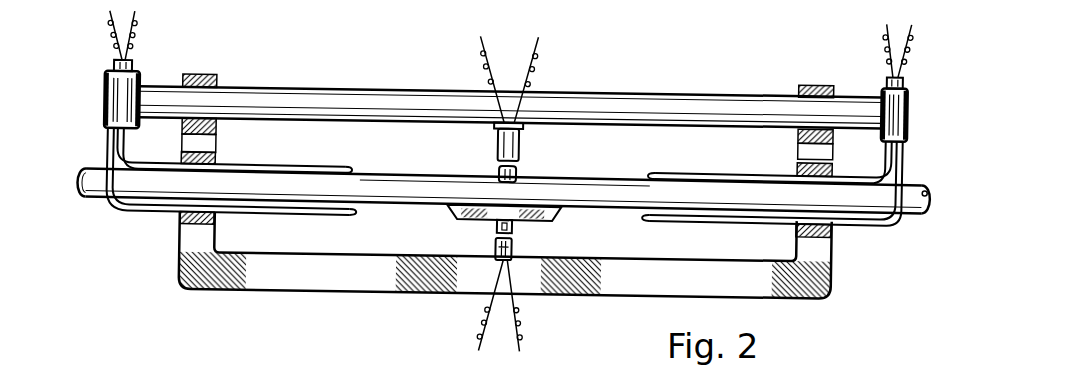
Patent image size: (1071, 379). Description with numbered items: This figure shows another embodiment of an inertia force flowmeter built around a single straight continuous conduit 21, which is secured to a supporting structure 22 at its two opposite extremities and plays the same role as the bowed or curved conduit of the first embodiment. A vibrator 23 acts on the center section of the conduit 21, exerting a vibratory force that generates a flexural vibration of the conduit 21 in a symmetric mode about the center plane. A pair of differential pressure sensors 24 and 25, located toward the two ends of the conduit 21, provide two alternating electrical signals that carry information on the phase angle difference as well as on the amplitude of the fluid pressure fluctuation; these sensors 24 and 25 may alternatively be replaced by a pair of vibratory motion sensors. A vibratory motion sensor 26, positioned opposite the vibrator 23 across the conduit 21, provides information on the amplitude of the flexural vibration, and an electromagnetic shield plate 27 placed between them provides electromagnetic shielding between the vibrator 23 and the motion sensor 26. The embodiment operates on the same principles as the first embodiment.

The straight continuous conduit 21 is at (410, 188).
The support bracket 22 is at (322, 277).
The vibrator 23 is at (525, 160).
The differential pressure sensor 24 is at (103, 93).
The differential pressure sensor 25 is at (910, 108).
The vibratory motion sensor 26 is at (517, 233).
The electromagnetic shield plate 27 is at (497, 222).